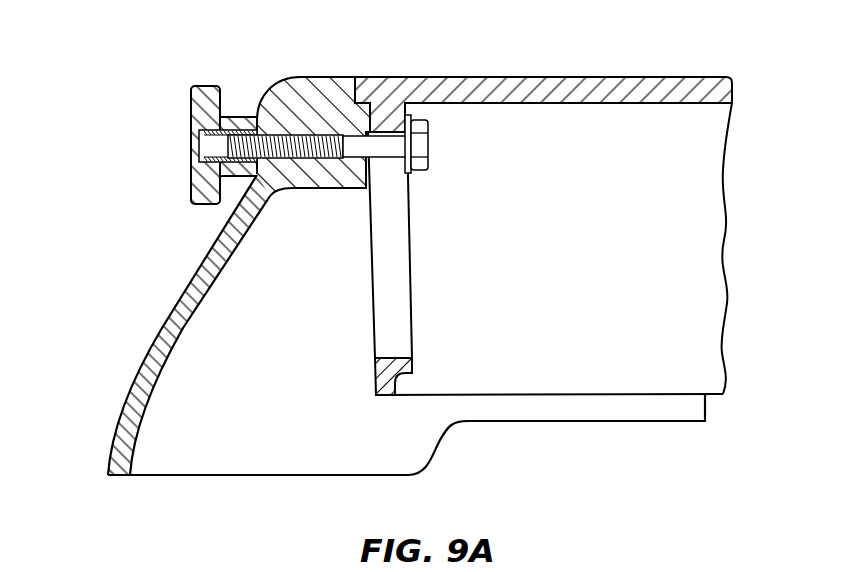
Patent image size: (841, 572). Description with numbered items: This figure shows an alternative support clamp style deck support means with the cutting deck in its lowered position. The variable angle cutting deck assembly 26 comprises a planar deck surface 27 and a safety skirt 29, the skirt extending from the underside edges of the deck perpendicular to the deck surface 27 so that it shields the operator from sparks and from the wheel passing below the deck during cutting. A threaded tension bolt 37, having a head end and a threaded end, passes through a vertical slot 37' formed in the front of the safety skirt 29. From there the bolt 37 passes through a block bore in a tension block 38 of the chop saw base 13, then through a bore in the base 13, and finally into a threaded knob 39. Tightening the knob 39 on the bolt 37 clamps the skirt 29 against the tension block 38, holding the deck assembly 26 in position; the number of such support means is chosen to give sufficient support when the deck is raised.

The chop saw base 13 is at (158, 328).
The variable angle cutting deck assembly 26 is at (685, 70).
The planar deck surface 27 is at (460, 79).
The safety skirt 29 is at (583, 383).
The threaded tension bolt 37 is at (460, 167).
The vertical slot 37' is at (446, 263).
The tension block 38 is at (287, 122).
The threaded knob 39 is at (183, 173).